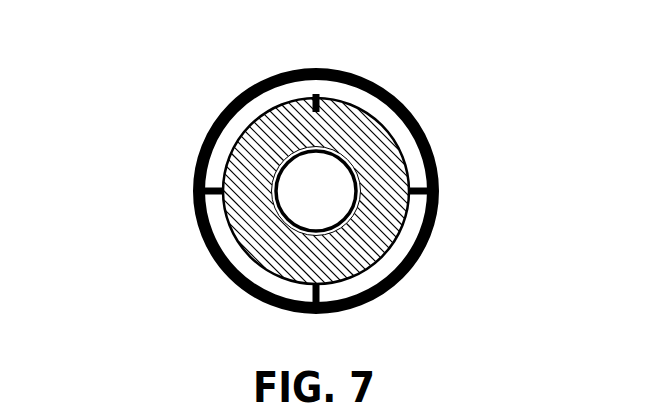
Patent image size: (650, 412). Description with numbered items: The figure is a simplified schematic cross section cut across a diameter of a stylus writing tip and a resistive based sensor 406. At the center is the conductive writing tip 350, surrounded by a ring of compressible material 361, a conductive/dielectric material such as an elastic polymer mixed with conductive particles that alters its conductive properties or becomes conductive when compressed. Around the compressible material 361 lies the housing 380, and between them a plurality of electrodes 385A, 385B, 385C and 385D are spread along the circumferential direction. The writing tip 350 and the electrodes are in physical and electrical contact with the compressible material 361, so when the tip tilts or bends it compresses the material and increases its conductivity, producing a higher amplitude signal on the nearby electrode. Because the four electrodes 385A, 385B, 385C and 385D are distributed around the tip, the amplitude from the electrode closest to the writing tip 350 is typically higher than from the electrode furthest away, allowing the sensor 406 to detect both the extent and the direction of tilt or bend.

The resistive based sensor 406 is at (131, 182).
The compressible material 361 is at (301, 121).
The writing tip 350 is at (330, 188).
The housing 380 is at (364, 307).
The electrode 385A is at (397, 125).
The electrode 385B is at (408, 235).
The electrode 385C is at (243, 265).
The electrode 385D is at (232, 130).